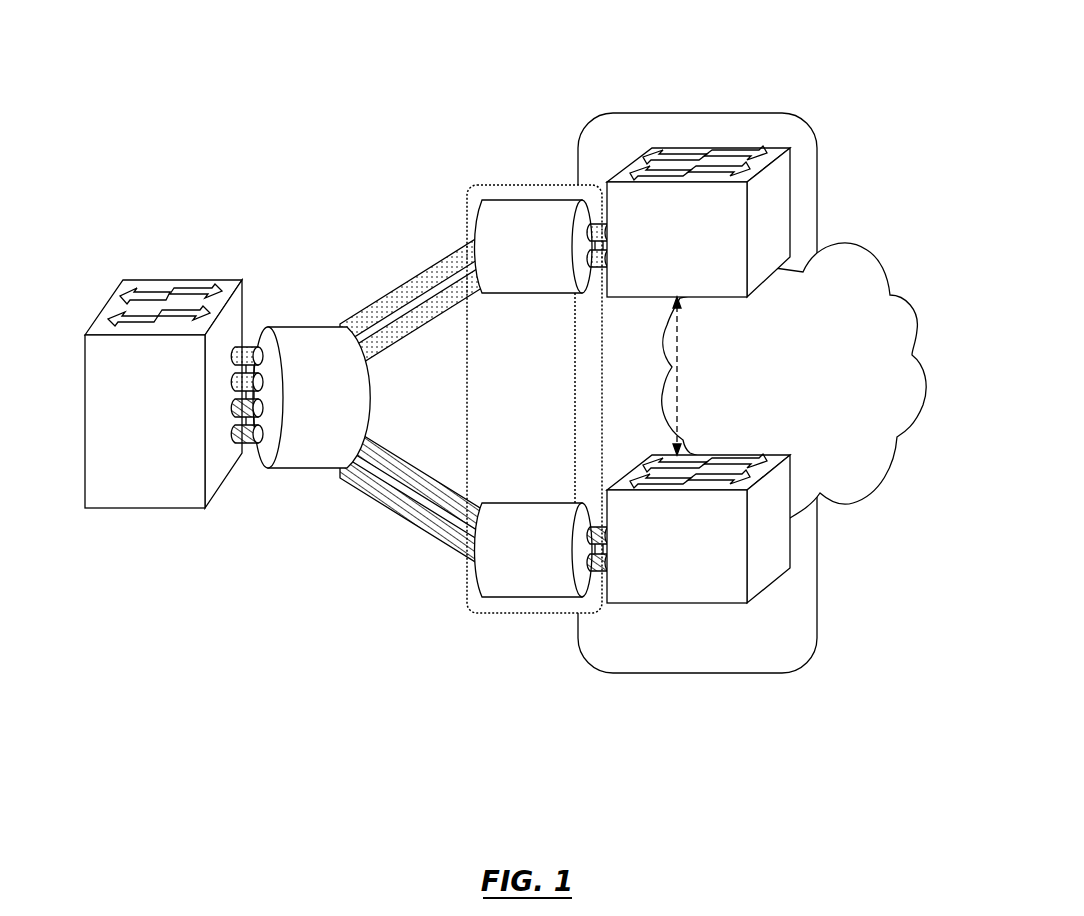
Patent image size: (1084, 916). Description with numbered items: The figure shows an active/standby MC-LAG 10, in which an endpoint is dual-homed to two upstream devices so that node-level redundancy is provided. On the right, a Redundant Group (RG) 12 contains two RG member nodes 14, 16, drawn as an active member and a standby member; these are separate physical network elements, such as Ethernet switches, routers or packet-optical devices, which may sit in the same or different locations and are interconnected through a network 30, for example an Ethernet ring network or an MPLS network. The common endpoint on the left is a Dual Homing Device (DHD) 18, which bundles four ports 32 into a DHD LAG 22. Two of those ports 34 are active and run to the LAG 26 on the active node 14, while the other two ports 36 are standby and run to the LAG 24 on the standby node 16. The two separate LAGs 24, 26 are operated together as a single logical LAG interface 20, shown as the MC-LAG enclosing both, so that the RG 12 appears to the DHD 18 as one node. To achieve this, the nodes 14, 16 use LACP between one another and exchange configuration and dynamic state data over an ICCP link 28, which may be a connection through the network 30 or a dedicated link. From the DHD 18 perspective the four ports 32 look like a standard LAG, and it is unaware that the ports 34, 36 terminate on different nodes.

The active/standby MC-LAG 10 is at (536, 22).
The Redundant Group (RG) 12 is at (715, 113).
The RG member node 14 is at (793, 180).
The RG member node 16 is at (791, 558).
The Dual Homing Device (DHD) 18 is at (167, 280).
The logical LAG interface 20 is at (512, 613).
The DHD LAG 22 is at (297, 327).
The LAG of standby node 24 is at (477, 582).
The LAG of active node 26 is at (502, 200).
The ICCP link 28 is at (678, 403).
The network 30 is at (837, 250).
The ports 32 is at (252, 314).
The active ports 34 is at (422, 331).
The standby ports 36 is at (408, 522).